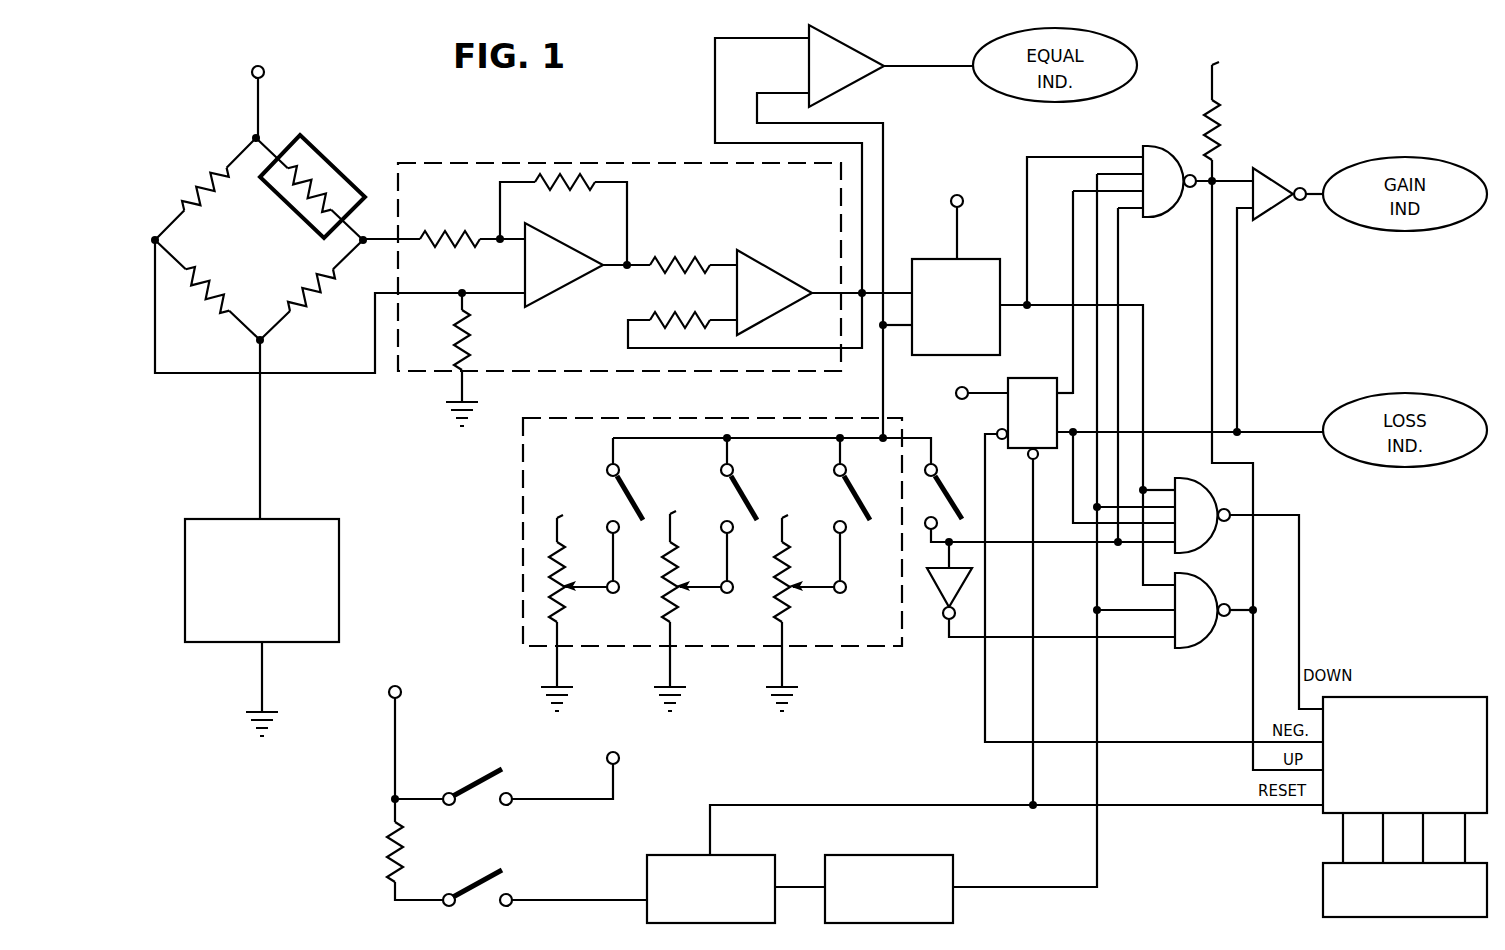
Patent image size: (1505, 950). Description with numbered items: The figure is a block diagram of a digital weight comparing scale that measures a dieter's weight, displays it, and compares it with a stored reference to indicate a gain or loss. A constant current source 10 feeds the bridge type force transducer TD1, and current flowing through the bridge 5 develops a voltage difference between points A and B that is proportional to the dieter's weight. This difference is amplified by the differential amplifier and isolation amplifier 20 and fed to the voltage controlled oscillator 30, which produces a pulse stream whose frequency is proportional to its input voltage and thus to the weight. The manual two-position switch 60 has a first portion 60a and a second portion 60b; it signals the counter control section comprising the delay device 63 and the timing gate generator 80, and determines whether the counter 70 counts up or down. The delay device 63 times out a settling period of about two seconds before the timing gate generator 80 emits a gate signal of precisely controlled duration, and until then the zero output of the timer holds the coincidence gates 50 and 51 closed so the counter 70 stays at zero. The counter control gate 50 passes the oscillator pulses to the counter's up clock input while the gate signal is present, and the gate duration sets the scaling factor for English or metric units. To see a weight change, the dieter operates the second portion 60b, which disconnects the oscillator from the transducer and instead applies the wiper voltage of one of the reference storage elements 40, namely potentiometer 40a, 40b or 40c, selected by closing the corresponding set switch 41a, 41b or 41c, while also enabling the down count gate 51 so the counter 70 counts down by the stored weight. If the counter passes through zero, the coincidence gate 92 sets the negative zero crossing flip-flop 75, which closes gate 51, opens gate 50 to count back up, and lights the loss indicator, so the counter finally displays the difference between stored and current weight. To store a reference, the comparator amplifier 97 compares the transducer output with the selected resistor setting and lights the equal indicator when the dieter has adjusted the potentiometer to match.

The bridge 5 is at (266, 250).
The bridge type force transducer TD1 is at (338, 166).
The constant current source 10 is at (207, 525).
The differential amplifier and isolation amplifier 20 is at (535, 162).
The voltage controlled oscillator 30 is at (946, 262).
The reference storage elements 40 is at (674, 564).
The storage resistor potentiometer 40a is at (545, 553).
The storage resistor potentiometer 40b is at (662, 589).
The storage resistor potentiometer 40c is at (776, 589).
The set switch 41a is at (620, 492).
The set switch 41b is at (735, 492).
The set switch 41c is at (855, 503).
The counter control gate 50 is at (1196, 643).
The down count coincidence gate 51 is at (1199, 486).
The manual two-position switch 60 is at (484, 784).
The first portion of manual switch 60a is at (479, 776).
The second portion of manual switch 60b is at (471, 891).
The delay device 63 is at (700, 852).
The counter 70 is at (1384, 686).
The negative zero crossing gate flip-flop 75 is at (1030, 378).
The timing gate generator 80 is at (950, 868).
The coincidence gate 92 is at (1160, 166).
The comparator amplifier 97 is at (846, 46).